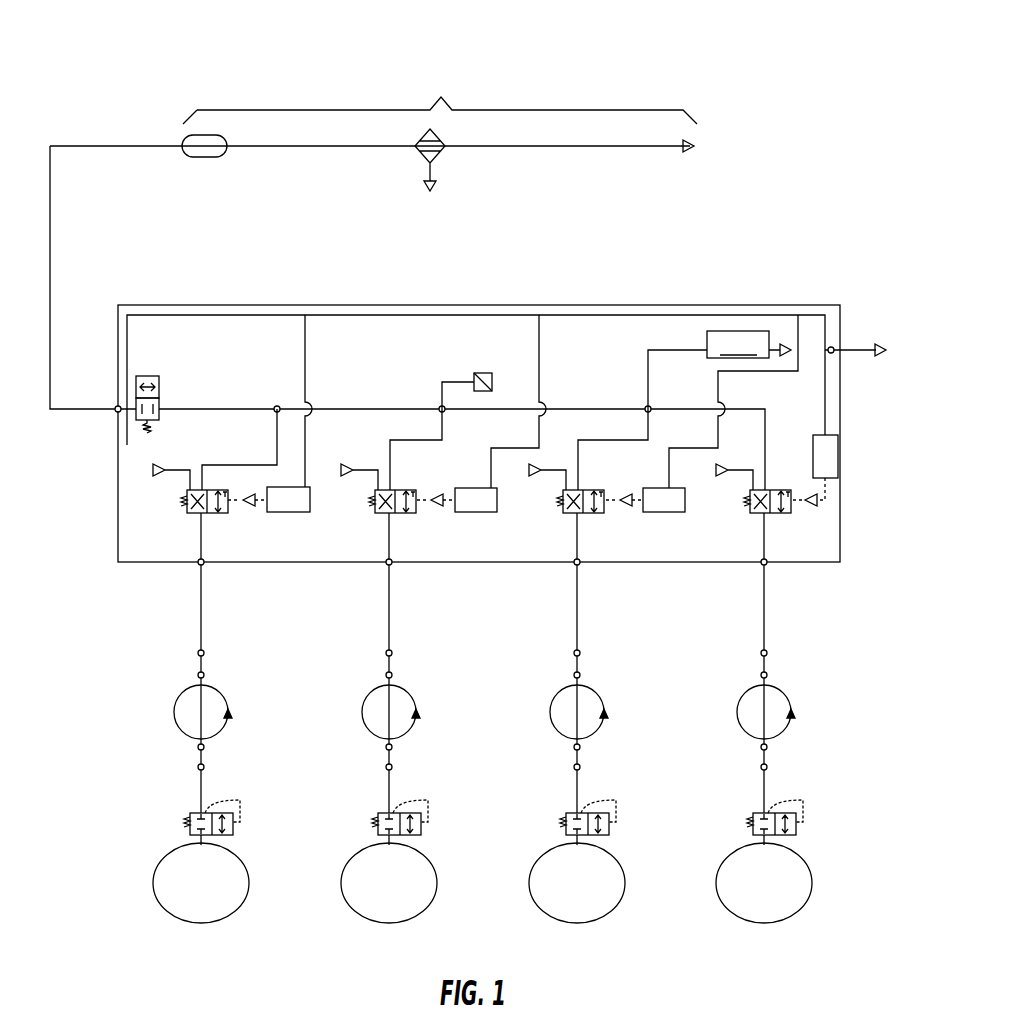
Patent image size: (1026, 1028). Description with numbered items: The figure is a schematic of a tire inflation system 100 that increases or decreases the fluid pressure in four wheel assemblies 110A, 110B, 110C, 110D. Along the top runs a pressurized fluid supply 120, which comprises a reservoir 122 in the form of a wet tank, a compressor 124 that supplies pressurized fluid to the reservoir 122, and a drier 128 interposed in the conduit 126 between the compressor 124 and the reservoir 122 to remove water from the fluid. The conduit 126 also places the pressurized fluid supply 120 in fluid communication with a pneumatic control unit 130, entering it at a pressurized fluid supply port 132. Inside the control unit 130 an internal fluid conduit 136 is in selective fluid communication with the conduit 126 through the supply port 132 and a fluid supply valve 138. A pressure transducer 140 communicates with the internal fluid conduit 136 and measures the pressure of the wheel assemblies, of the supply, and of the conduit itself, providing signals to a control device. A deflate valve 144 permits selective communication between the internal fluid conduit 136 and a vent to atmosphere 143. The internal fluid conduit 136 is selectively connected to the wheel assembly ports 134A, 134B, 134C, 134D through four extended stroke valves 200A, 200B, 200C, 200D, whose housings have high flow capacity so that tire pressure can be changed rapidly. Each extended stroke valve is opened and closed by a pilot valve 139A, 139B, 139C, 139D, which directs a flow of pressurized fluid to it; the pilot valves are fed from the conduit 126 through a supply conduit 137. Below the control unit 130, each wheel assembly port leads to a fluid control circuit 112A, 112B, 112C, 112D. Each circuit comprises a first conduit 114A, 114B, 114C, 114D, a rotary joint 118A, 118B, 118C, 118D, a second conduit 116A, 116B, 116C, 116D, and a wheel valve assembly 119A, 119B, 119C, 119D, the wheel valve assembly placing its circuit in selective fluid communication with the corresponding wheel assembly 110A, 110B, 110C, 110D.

The tire inflation system 100 is at (832, 148).
The wheel assembly 110A is at (190, 913).
The wheel assembly 110B is at (378, 916).
The wheel assembly 110C is at (585, 912).
The wheel assembly 110D is at (770, 912).
The fluid control circuit 112A is at (200, 642).
The fluid control circuit 112B is at (388, 635).
The fluid control circuit 112C is at (576, 635).
The fluid control circuit 112D is at (762, 636).
The first conduit 114A is at (202, 614).
The first conduit 114B is at (390, 614).
The first conduit 114C is at (578, 614).
The first conduit 114D is at (766, 616).
The second conduit 116A is at (196, 799).
The second conduit 116B is at (386, 800).
The second conduit 116C is at (566, 800).
The second conduit 116D is at (758, 802).
The rotary joint 118A is at (228, 730).
The rotary joint 118B is at (415, 732).
The rotary joint 118C is at (600, 732).
The rotary joint 118D is at (775, 728).
The wheel valve assembly 119A is at (234, 826).
The wheel valve assembly 119B is at (422, 826).
The wheel valve assembly 119C is at (610, 826).
The wheel valve assembly 119D is at (797, 825).
The pressurized fluid supply 120 is at (440, 93).
The reservoir 122 is at (201, 158).
The compressor 124 is at (689, 153).
The conduit 126 is at (86, 146).
The drier 128 is at (428, 164).
The control unit 130 is at (204, 305).
The pressurized fluid supply port 132 is at (118, 413).
The wheel assembly port 134A is at (200, 566).
The wheel assembly port 134B is at (388, 566).
The wheel assembly port 134C is at (576, 566).
The wheel assembly port 134D is at (763, 566).
The internal fluid conduit 136 is at (235, 408).
The supply conduit 137 is at (365, 316).
The fluid supply valve 138 is at (151, 386).
The pilot valve 139A is at (282, 513).
The pilot valve 139B is at (472, 513).
The pilot valve 139C is at (659, 513).
The pilot valve 139D is at (814, 446).
The pressure transducer 140 is at (491, 387).
The vent to atmosphere 143 is at (845, 350).
The deflate valve 144 is at (749, 344).
The extended stroke valve 200A is at (193, 514).
The extended stroke valve 200B is at (381, 514).
The extended stroke valve 200C is at (569, 514).
The extended stroke valve 200D is at (757, 514).